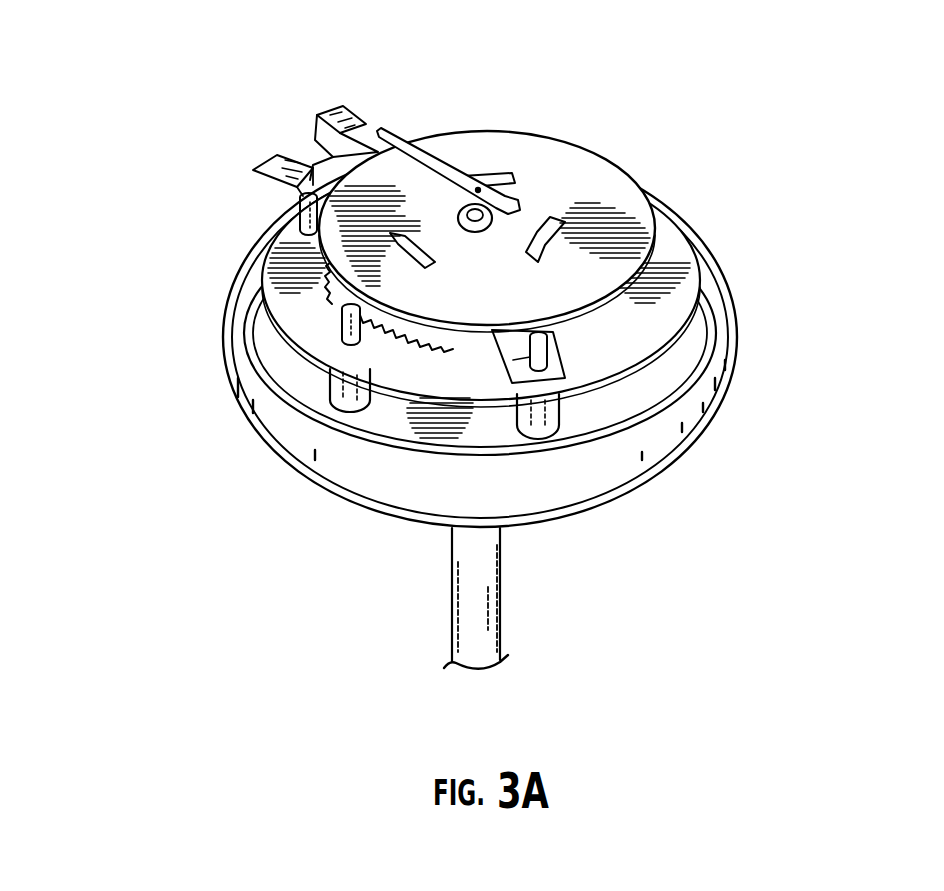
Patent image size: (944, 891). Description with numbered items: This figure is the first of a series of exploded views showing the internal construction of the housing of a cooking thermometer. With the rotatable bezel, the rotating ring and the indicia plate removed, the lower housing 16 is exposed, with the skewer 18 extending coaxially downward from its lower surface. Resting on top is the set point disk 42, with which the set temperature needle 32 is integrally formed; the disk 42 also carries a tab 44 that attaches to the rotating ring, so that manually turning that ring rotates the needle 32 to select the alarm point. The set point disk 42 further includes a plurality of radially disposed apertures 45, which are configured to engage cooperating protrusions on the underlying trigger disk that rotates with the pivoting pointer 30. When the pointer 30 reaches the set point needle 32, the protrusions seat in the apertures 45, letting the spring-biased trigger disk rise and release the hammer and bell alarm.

The lower housing 16 is at (727, 390).
The skewer 18 is at (478, 598).
The pointer 30 is at (430, 148).
The set temperature needle 32 is at (340, 105).
The set point disk 42 is at (563, 147).
The tab 44 is at (273, 157).
The apertures 45 is at (497, 172).